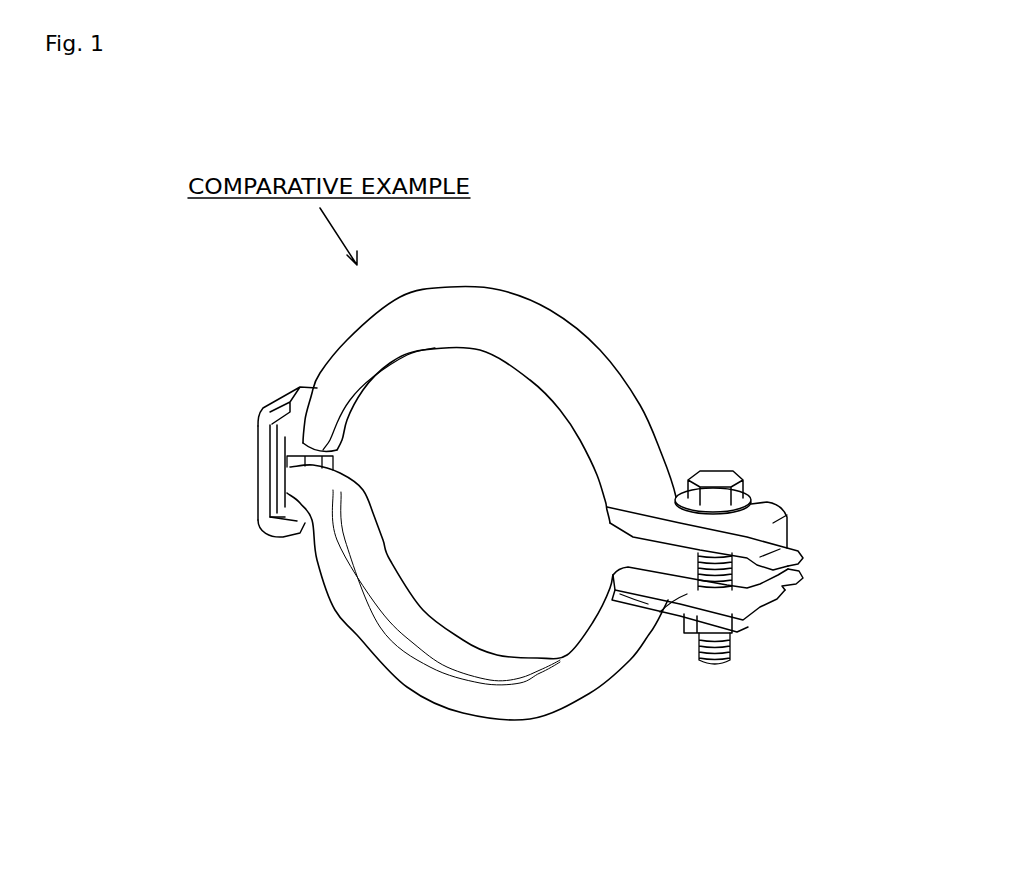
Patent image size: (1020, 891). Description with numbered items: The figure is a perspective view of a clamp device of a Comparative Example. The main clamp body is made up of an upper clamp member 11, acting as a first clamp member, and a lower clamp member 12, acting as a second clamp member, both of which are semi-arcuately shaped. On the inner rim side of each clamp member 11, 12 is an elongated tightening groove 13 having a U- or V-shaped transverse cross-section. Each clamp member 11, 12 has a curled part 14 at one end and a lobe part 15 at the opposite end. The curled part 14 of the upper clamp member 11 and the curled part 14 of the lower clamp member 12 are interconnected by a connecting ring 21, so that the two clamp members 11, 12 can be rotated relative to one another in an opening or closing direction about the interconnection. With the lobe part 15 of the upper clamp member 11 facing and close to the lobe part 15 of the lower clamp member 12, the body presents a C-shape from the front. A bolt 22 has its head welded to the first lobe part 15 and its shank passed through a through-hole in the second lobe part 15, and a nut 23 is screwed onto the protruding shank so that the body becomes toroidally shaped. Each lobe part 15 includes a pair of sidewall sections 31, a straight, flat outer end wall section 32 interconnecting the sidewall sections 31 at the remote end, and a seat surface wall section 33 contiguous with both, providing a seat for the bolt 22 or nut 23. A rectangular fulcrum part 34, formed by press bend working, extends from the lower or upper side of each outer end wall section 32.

The upper clamp member 11 is at (490, 305).
The lower clamp member 12 is at (462, 712).
The tightening groove 13 is at (368, 395).
The curled part 14 is at (268, 410).
The lobe part 15 is at (753, 497).
The connecting ring 21 is at (268, 468).
The bolt 22 is at (713, 470).
The nut 23 is at (697, 622).
The sidewall section 31 is at (680, 542).
The outer end wall section 32 is at (772, 531).
The seat surface wall section 33 is at (762, 507).
The fulcrum part 34 is at (800, 558).